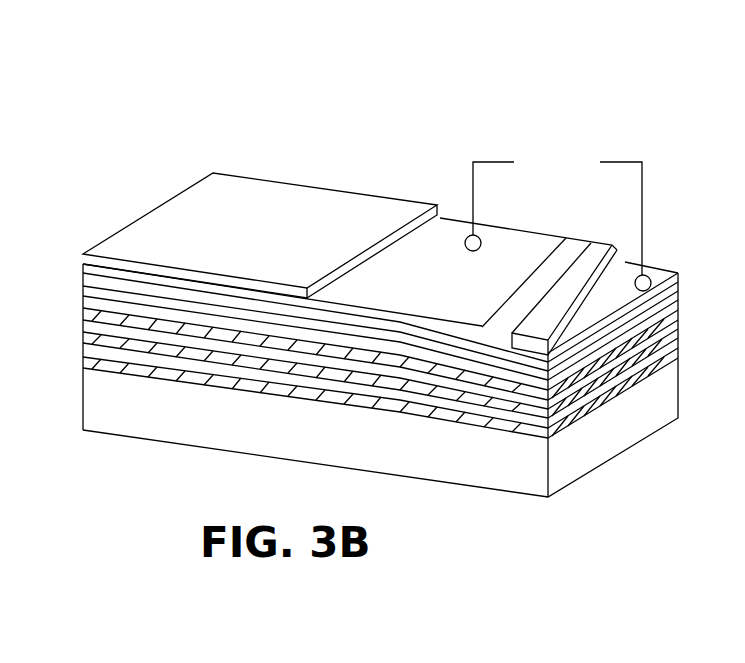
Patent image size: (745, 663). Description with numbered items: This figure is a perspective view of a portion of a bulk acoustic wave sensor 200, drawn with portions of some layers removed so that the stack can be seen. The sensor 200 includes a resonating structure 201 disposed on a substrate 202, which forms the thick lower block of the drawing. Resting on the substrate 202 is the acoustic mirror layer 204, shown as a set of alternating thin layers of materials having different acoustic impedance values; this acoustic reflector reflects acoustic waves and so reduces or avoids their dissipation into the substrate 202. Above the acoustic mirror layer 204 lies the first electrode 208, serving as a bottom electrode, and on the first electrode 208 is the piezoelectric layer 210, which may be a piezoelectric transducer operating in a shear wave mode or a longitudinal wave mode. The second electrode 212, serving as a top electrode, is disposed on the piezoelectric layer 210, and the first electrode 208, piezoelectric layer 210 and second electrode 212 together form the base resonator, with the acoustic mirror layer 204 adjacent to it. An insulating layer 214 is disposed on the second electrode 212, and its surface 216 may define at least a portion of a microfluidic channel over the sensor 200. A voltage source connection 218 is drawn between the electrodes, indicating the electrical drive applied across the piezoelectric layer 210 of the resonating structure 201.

The bulk acoustic wave sensor 200 is at (397, 108).
The resonating structure 201 is at (74, 269).
The substrate 202 is at (94, 387).
The acoustic mirror layer 204 is at (76, 292).
The first electrode 208 is at (619, 300).
The piezoelectric layer 210 is at (625, 258).
The second electrode 212 is at (553, 252).
The insulating layer 214 is at (173, 230).
The surface 216 is at (245, 192).
The voltage source wire 218 is at (645, 200).